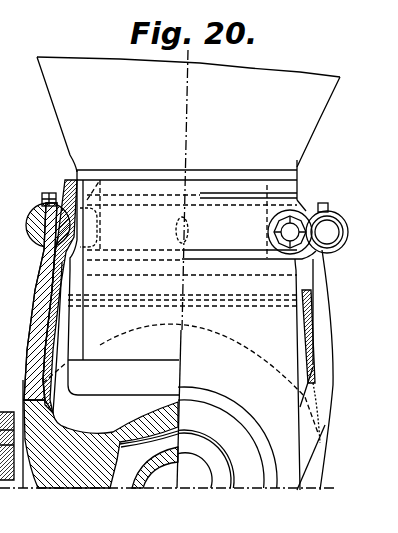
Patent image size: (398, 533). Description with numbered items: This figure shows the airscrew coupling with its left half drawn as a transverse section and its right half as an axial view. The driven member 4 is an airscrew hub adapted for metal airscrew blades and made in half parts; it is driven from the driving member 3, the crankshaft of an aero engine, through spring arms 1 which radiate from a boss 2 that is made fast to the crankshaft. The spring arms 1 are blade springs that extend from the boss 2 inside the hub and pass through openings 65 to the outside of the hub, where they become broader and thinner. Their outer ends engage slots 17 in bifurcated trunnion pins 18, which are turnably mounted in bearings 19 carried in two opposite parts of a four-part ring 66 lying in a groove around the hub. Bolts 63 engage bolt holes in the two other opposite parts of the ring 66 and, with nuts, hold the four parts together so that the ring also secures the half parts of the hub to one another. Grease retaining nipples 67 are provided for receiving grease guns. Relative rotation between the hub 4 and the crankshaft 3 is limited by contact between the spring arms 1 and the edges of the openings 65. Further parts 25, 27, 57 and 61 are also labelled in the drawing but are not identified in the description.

The spring arms 1 is at (44, 288).
The boss 2 is at (123, 478).
The driving member 3 is at (138, 480).
The driven member 4 is at (68, 343).
The slots 17 is at (58, 184).
The trunnion pins 18 is at (30, 222).
The bearings 19 is at (42, 236).
The side bracket 25 is at (8, 404).
The wedge 27 is at (29, 280).
The clamp 57 is at (44, 196).
The hopper 61 is at (62, 95).
The bolts 63 is at (287, 238).
The openings 65 is at (65, 423).
The four-part ring 66 is at (65, 180).
The grease retaining nipples 67 is at (277, 207).